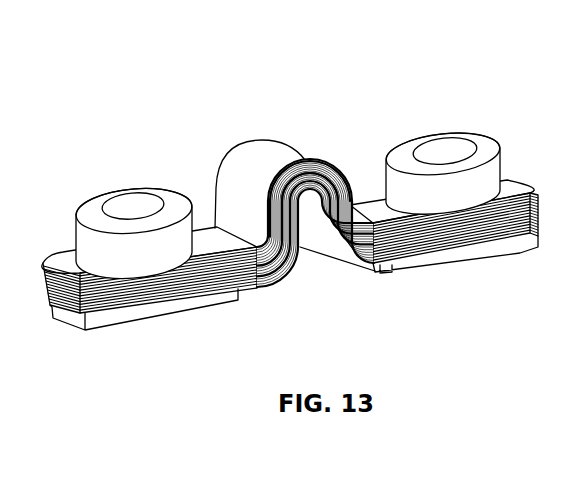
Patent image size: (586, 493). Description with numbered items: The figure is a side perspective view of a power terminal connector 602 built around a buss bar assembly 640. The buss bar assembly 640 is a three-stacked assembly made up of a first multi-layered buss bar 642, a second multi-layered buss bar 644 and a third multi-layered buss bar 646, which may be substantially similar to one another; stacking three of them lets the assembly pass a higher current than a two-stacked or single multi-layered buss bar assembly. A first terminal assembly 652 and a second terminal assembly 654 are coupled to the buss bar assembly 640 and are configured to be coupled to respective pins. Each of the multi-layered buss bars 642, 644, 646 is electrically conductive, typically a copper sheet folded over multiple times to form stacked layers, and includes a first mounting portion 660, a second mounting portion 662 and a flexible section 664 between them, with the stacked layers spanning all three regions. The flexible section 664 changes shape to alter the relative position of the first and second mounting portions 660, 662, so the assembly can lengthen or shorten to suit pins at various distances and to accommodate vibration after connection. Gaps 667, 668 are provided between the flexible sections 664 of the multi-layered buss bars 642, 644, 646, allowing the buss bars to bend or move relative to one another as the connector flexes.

The power terminal connector 602 is at (291, 188).
The buss bar assembly 640 is at (292, 195).
The first multi-layered buss bar 642 is at (308, 158).
The second multi-layered buss bar 644 is at (327, 172).
The third multi-layered buss bar 646 is at (330, 190).
The first terminal assembly 652 is at (125, 192).
The second terminal assembly 654 is at (447, 132).
The first mounting portion 660 is at (262, 311).
The second mounting portion 662 is at (540, 263).
The flexible section 664 is at (292, 200).
The gap 667 is at (283, 202).
The gap 668 is at (287, 170).